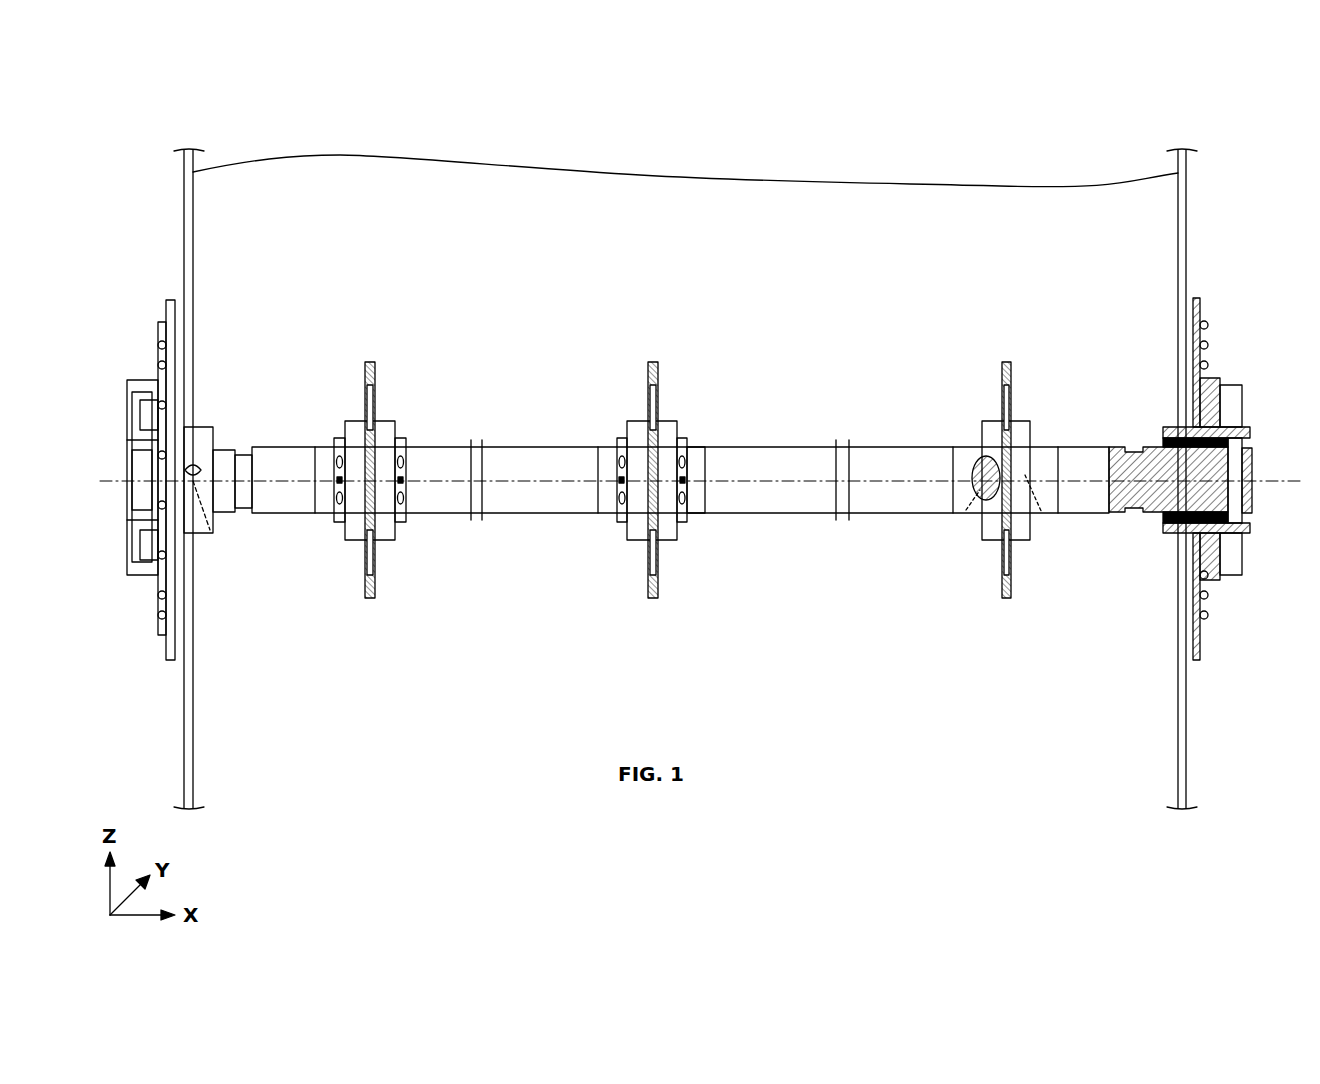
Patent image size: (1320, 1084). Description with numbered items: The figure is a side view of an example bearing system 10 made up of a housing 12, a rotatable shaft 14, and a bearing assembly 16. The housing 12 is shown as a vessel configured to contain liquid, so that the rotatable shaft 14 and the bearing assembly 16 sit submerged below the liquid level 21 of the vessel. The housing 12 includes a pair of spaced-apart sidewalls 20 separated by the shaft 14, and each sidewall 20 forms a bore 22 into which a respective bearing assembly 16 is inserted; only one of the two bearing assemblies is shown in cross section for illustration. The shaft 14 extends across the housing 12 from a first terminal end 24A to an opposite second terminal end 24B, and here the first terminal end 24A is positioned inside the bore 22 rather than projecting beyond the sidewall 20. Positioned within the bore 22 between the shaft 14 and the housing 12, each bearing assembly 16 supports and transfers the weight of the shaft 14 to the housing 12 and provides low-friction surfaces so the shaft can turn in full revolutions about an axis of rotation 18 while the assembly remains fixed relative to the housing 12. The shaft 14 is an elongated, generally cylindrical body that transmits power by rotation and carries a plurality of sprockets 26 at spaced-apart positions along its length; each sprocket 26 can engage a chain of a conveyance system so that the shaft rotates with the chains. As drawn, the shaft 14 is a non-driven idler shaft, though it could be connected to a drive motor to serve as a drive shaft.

The bearing system 10 is at (1240, 152).
The housing 12 is at (155, 228).
The rotatable shaft 14 is at (752, 447).
The bearing assembly 16 is at (1135, 432).
The axis of rotation 18 is at (1248, 478).
The sidewall 20 is at (193, 297).
The liquid level 21 is at (810, 183).
The bore 22 is at (210, 428).
The first terminal end 24A is at (1225, 462).
The second terminal end 24B is at (125, 450).
The sprocket 26 is at (655, 600).